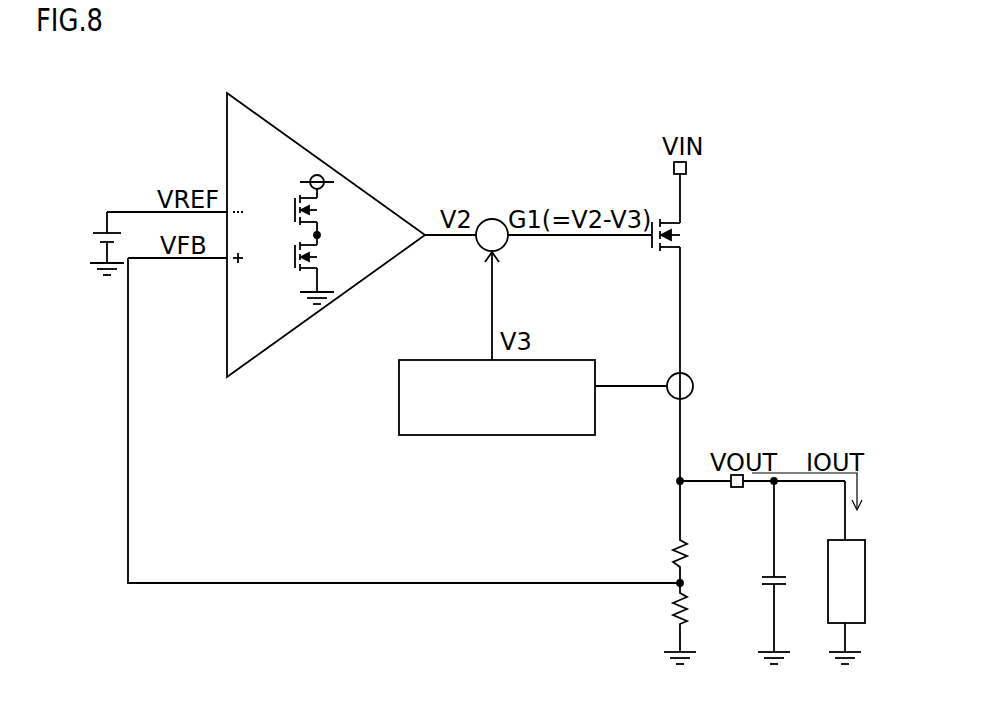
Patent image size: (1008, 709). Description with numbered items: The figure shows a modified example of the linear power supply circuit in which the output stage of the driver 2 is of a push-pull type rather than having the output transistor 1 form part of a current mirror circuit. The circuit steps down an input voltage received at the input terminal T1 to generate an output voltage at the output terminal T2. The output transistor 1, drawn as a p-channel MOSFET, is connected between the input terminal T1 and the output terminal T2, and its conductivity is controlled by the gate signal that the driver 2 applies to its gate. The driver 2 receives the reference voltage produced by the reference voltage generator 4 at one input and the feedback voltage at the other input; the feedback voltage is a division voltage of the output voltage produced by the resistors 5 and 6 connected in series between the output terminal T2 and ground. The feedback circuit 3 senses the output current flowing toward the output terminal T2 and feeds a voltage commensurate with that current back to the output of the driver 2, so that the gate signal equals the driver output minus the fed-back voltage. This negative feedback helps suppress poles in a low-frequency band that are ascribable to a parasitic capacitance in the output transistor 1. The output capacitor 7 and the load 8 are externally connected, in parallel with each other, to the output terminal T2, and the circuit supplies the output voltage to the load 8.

The output transistor 1 is at (690, 242).
The driver 2 is at (291, 134).
The feedback circuit 3 is at (587, 360).
The reference voltage generator 4 is at (92, 234).
The resistor 5 is at (690, 555).
The resistor 6 is at (690, 609).
The output capacitor 7 is at (785, 582).
The load 8 is at (876, 573).
The input terminal T1 is at (687, 169).
The output terminal T2 is at (737, 488).